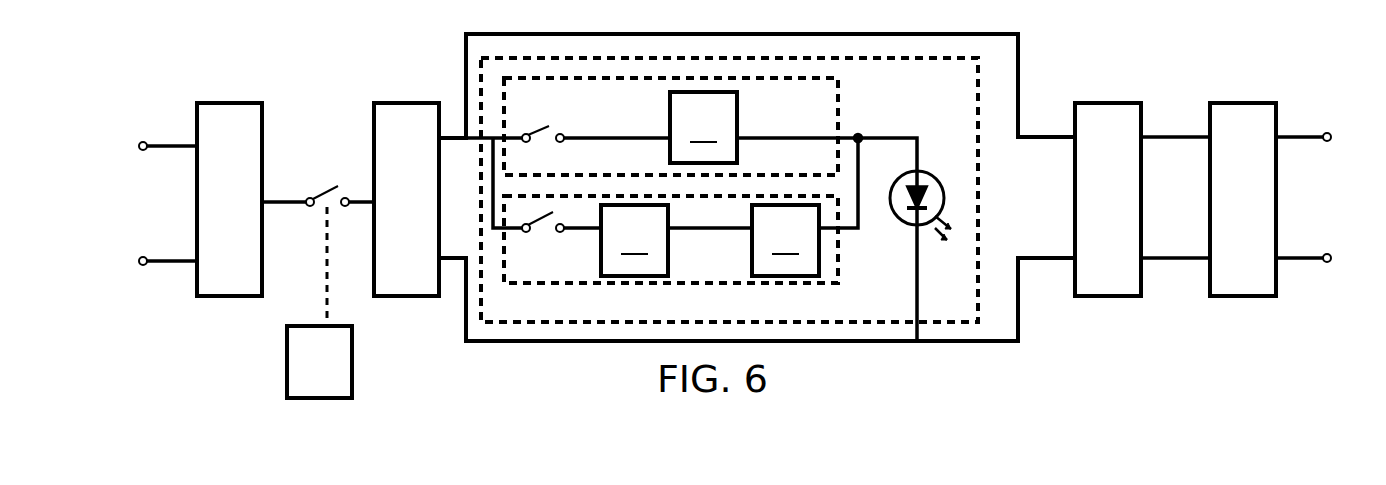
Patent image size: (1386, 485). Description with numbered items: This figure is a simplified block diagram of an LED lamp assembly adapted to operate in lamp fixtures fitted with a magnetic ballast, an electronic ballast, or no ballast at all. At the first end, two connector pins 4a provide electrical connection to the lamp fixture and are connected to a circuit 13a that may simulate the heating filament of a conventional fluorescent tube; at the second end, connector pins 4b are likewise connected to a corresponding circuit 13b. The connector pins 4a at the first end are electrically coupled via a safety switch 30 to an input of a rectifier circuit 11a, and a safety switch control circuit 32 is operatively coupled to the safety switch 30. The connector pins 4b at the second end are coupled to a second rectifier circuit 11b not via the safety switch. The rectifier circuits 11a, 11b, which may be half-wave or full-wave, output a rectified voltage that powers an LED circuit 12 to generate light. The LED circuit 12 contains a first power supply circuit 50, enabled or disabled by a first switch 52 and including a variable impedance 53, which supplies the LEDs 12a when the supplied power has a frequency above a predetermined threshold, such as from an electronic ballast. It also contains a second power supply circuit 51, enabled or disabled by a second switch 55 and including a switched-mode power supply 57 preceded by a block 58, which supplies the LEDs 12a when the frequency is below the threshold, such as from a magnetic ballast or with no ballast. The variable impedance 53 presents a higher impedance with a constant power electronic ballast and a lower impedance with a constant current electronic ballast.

The connector pins 4a is at (170, 143).
The circuit 13a is at (228, 103).
The safety switch 30 is at (332, 180).
The safety switch control circuit 32 is at (352, 364).
The rectifier circuit 11a is at (405, 103).
The LED circuit 12 is at (978, 186).
The first power supply circuit 50 is at (838, 98).
The second power supply circuit 51 is at (838, 272).
The first switch 52 is at (549, 126).
The variable impedance 53 is at (703, 127).
The second switch 55 is at (542, 225).
The converter 58 is at (634, 240).
The switched-mode power supply 57 is at (785, 240).
The LEDs 12a is at (948, 140).
The rectifier circuit 11b is at (1097, 103).
The circuit 13b is at (1228, 103).
The connector pins 4b is at (1300, 137).